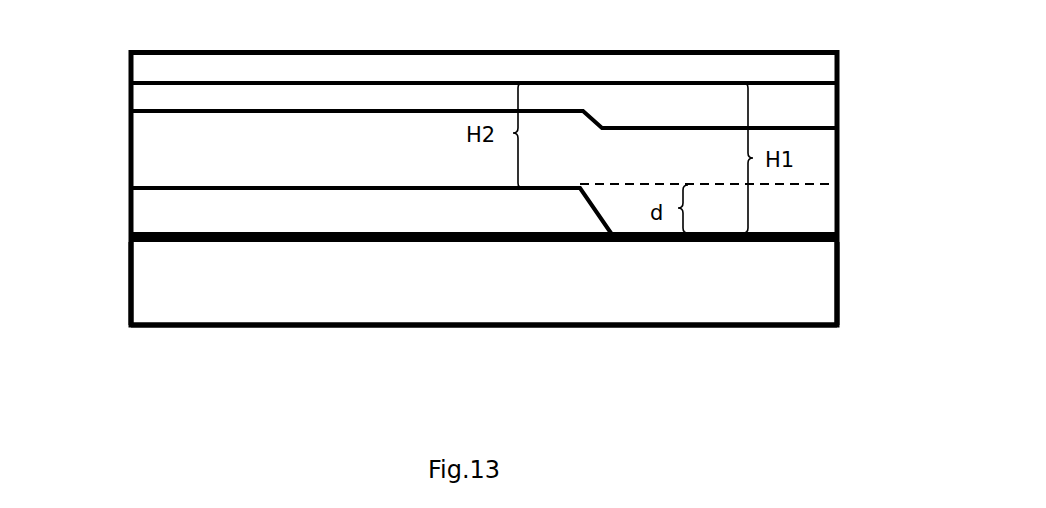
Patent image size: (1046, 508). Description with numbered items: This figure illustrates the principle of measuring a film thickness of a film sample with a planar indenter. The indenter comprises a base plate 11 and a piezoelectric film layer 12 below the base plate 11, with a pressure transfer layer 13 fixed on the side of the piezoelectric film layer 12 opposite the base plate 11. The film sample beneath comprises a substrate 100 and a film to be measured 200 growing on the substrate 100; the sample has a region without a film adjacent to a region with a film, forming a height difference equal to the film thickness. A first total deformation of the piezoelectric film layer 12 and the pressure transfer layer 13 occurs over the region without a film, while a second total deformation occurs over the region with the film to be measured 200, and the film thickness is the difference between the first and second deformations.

The base plate 11 is at (793, 67).
The piezoelectric film layer 12 is at (805, 120).
The pressure transfer layer 13 is at (807, 157).
The substrate 100 is at (805, 297).
The film to be measured 200 is at (197, 213).